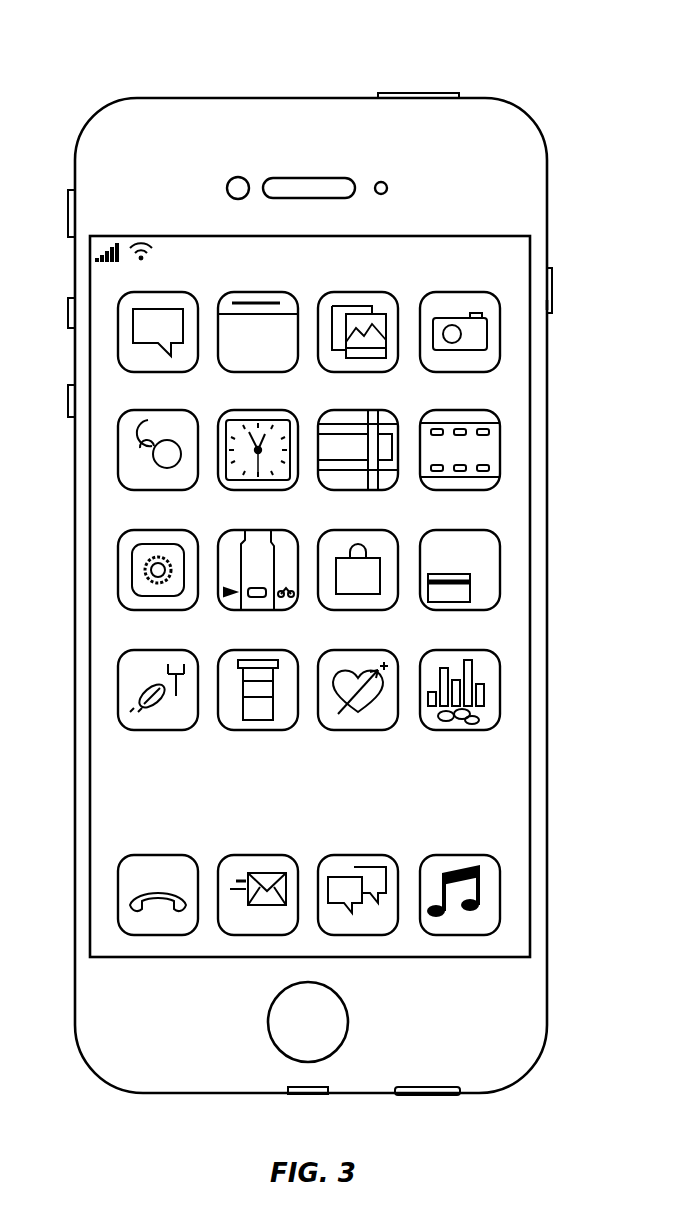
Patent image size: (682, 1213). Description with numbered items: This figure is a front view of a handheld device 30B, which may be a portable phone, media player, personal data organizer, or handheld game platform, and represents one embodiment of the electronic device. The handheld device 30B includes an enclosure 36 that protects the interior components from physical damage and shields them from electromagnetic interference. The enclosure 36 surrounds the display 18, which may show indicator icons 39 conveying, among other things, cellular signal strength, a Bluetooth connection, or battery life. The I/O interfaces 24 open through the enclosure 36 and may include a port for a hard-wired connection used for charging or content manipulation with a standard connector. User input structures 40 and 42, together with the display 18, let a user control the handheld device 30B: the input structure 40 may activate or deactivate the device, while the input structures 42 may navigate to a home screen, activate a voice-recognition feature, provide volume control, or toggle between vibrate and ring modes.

The handheld device 30B is at (74, 96).
The input structure 40 is at (416, 93).
The enclosure 36 is at (548, 186).
The input structures 42 is at (67, 214).
The display 18 is at (531, 508).
The indicator icons 39 is at (141, 238).
The I/O interfaces 24 is at (310, 1097).